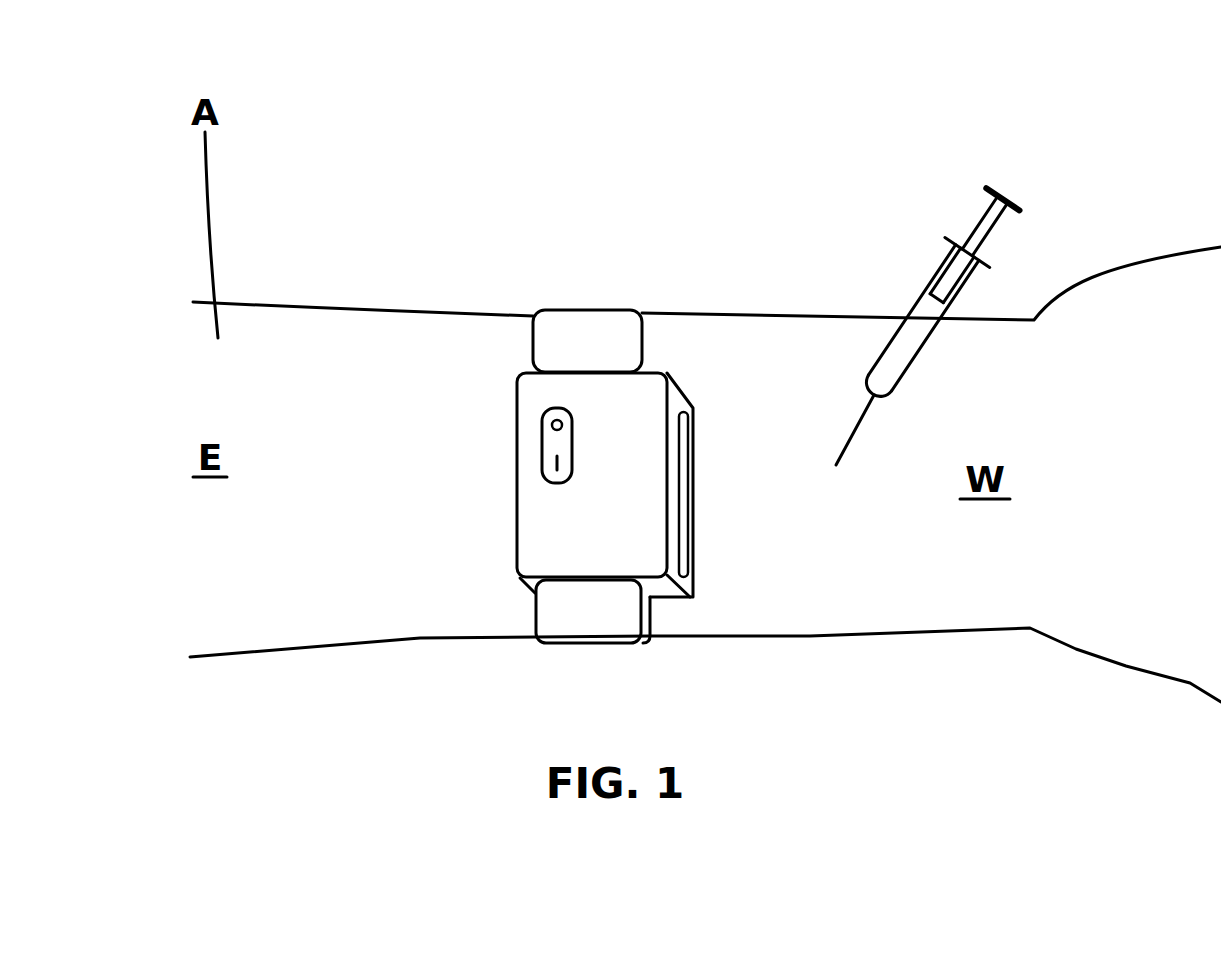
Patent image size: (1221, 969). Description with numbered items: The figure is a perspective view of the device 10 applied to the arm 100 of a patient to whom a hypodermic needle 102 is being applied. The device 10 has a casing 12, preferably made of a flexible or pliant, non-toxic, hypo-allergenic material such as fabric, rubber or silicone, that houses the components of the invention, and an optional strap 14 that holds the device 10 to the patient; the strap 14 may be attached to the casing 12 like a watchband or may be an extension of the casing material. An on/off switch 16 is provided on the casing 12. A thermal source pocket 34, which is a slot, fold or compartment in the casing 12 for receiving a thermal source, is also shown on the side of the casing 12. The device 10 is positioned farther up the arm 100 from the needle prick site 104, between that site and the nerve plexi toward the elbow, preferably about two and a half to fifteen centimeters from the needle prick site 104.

The device 10 is at (480, 258).
The casing 12 is at (650, 392).
The strap 14 is at (578, 615).
The on/off switch 16 is at (550, 447).
The thermal source pocket 34 is at (692, 558).
The arm 100 is at (300, 477).
The hypodermic needle 102 is at (847, 437).
The needle prick site 104 is at (838, 484).